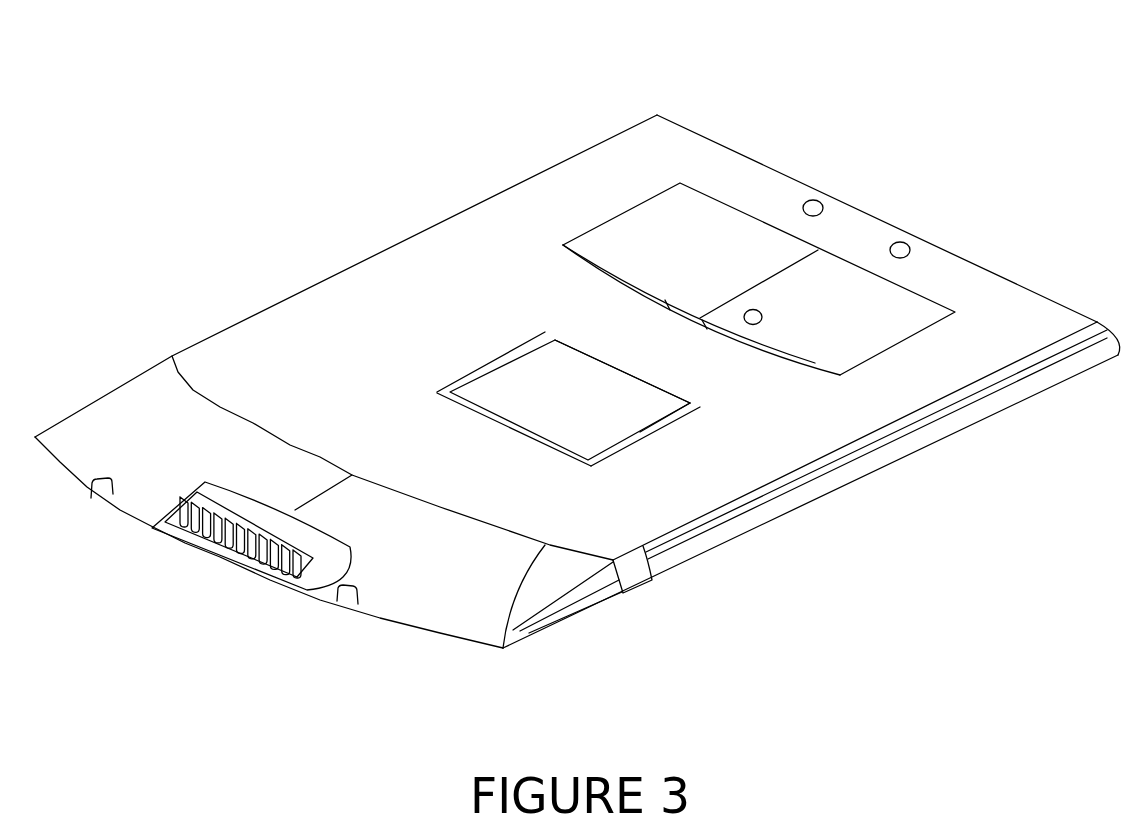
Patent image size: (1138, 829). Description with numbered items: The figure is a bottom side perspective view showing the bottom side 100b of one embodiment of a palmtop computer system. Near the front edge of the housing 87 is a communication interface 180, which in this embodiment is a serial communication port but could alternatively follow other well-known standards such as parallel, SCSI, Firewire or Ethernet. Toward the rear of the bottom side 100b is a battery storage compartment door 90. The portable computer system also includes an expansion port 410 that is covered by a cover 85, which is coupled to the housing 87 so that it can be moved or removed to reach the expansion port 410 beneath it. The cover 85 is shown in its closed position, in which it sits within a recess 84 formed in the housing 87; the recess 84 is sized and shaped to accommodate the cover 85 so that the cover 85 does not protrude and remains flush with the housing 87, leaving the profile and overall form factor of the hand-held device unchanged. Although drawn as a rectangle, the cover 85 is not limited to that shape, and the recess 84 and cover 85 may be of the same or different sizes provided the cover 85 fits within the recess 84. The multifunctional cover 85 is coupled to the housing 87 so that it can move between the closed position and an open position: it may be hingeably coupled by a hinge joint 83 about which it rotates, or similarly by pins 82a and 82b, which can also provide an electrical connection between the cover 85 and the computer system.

The bottom side 100b is at (120, 64).
The housing 87 is at (299, 368).
The battery storage compartment door 90 is at (710, 253).
The cover 85 is at (584, 402).
The hinge joint 83 is at (607, 363).
The pin 82a is at (556, 339).
The pin 82b is at (689, 401).
The recess 84 is at (648, 435).
The expansion port 410 is at (621, 508).
The communication interface 180 is at (181, 555).